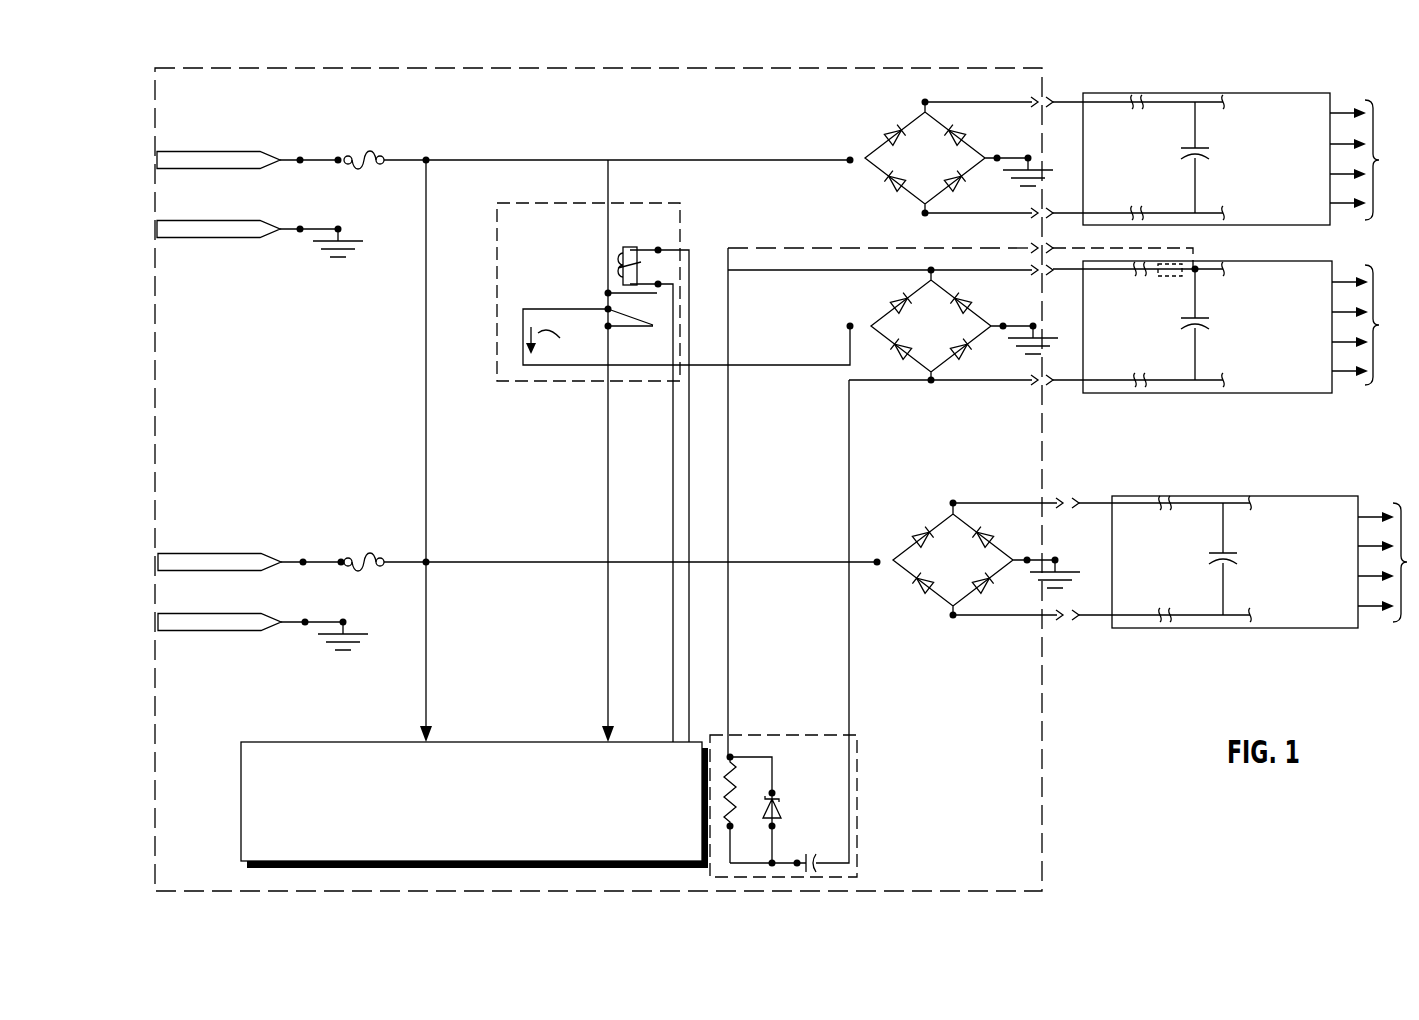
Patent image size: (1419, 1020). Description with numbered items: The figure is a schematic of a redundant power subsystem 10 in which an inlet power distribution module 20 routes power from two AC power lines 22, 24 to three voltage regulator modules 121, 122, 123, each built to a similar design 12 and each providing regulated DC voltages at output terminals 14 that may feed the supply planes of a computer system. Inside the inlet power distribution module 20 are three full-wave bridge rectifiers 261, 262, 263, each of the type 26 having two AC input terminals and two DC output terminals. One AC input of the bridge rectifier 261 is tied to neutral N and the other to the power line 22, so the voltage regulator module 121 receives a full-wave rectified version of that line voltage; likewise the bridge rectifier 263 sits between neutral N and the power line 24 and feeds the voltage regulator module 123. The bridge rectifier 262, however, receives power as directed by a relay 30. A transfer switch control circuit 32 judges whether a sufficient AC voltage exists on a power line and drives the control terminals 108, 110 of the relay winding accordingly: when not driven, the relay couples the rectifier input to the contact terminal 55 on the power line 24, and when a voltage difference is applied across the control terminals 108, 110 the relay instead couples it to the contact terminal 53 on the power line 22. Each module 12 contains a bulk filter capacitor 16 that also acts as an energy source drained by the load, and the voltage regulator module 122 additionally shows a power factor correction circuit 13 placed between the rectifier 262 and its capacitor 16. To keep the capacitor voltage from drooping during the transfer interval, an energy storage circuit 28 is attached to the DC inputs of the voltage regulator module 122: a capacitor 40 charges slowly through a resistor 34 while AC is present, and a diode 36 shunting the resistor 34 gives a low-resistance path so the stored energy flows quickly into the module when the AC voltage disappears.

The redundant power subsystem 10 is at (1065, 86).
The voltage regulator module 12 is at (1210, 343).
The voltage regulator module 121 is at (1186, 93).
The voltage regulator module 122 is at (1267, 393).
The voltage regulator module 123 is at (1213, 496).
The power factor correction circuit 13 is at (1170, 263).
The output terminals 14 is at (1372, 361).
The filter capacitor 16 is at (1200, 148).
The inlet power distribution module 20 is at (1043, 760).
The power line 22 is at (394, 160).
The power line 24 is at (407, 560).
The full-wave bridge rectifier 26 is at (904, 348).
The full-wave bridge rectifier 261 is at (893, 132).
The full-wave bridge rectifier 262 is at (893, 300).
The full-wave bridge rectifier 263 is at (920, 533).
The energy storage circuit 28 is at (809, 581).
The relay 30 is at (597, 458).
The transfer switch control circuit 32 is at (322, 742).
The resistor 34 is at (736, 782).
The diode 36 is at (776, 812).
The capacitor 40 is at (817, 858).
The contact terminal 53 is at (609, 248).
The contact terminal 55 is at (609, 492).
The control terminal 108 is at (670, 322).
The control terminal 110 is at (673, 249).
The neutral N is at (300, 229).